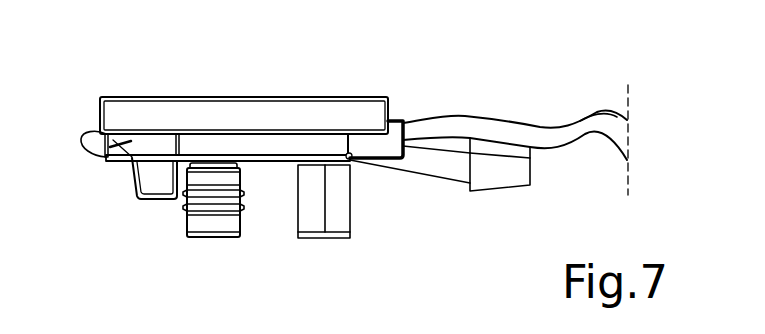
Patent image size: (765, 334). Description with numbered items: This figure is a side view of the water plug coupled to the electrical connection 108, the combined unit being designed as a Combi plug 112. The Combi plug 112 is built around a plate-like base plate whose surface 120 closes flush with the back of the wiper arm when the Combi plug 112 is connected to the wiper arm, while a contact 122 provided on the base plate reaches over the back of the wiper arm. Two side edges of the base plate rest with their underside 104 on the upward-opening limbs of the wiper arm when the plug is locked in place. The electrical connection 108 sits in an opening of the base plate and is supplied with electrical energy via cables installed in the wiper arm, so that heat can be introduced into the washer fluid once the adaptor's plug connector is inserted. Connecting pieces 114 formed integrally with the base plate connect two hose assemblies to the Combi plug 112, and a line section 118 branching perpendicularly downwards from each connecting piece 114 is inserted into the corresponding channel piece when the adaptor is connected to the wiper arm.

The Combi plug 112 is at (124, 61).
The surface of the base plate 120 is at (309, 98).
The contact 122 is at (403, 120).
The connecting pieces 114 is at (497, 150).
The underside 104 is at (107, 158).
The electrical connection 108 is at (238, 213).
The line section 118 is at (335, 207).